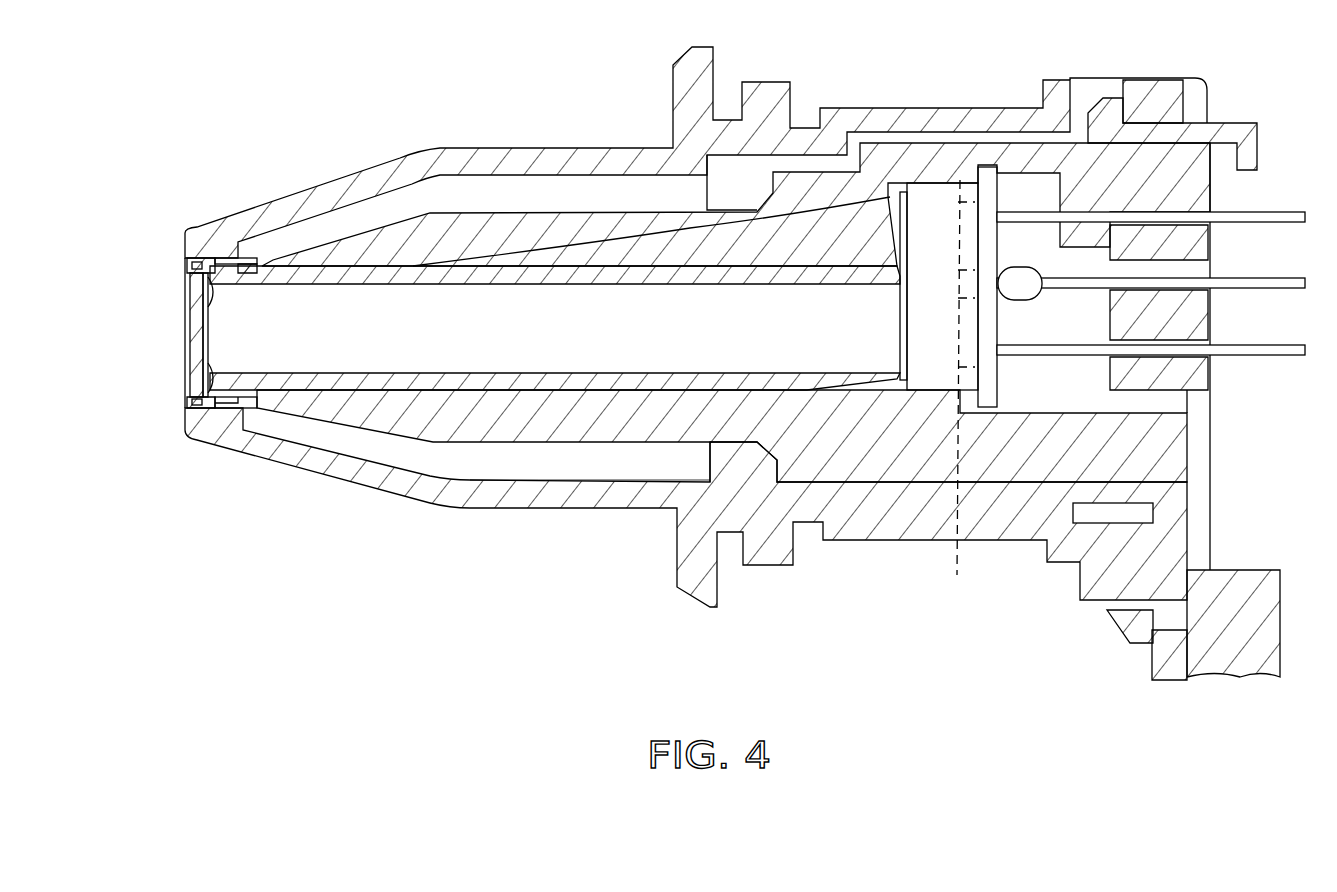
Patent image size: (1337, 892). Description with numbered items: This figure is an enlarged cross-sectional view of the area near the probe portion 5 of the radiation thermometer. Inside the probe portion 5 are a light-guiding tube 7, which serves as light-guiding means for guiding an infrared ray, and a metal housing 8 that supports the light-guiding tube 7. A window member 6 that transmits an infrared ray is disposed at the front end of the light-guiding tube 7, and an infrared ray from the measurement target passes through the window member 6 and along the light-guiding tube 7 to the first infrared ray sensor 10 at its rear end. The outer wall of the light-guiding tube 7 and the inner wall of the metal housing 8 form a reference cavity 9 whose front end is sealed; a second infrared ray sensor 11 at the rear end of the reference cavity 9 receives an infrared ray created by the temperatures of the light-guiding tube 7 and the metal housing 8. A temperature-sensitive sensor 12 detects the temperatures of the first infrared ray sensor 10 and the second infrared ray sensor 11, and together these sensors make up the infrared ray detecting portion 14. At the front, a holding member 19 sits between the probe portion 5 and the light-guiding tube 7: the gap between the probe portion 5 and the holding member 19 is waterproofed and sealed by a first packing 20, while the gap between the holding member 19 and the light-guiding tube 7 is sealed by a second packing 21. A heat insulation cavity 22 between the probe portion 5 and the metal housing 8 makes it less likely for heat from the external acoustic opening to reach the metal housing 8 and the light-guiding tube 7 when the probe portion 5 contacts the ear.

The probe portion 5 is at (413, 157).
The window member 6 is at (185, 335).
The light-guiding tube 7 is at (310, 387).
The metal housing 8 is at (500, 230).
The reference cavity 9 is at (807, 240).
The first infrared ray sensor 10 is at (958, 400).
The second infrared ray sensor 11 is at (962, 178).
The temperature-sensitive sensor 12 is at (1022, 280).
The infrared ray detecting portion 14 is at (928, 212).
The holding member 19 is at (230, 410).
The first packing 20 is at (185, 245).
The second packing 21 is at (183, 300).
The heat insulation cavity 22 is at (557, 460).